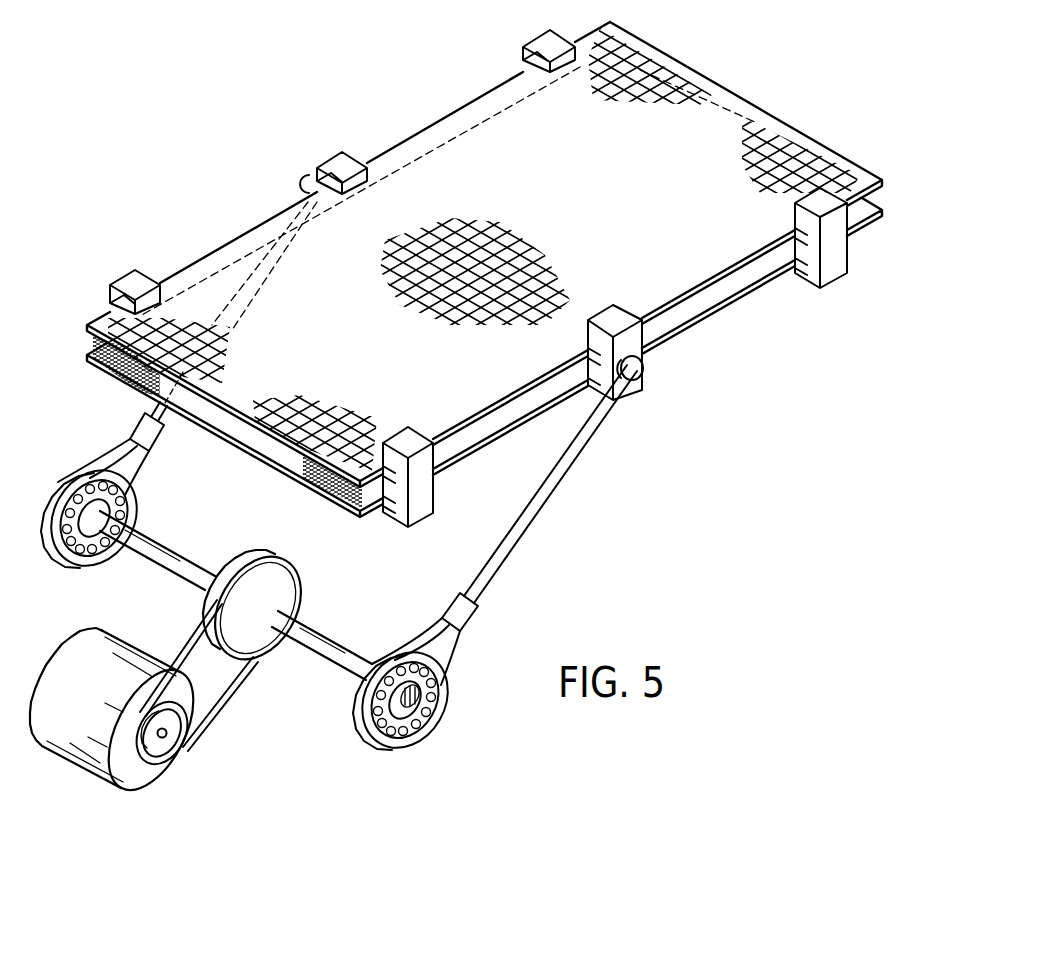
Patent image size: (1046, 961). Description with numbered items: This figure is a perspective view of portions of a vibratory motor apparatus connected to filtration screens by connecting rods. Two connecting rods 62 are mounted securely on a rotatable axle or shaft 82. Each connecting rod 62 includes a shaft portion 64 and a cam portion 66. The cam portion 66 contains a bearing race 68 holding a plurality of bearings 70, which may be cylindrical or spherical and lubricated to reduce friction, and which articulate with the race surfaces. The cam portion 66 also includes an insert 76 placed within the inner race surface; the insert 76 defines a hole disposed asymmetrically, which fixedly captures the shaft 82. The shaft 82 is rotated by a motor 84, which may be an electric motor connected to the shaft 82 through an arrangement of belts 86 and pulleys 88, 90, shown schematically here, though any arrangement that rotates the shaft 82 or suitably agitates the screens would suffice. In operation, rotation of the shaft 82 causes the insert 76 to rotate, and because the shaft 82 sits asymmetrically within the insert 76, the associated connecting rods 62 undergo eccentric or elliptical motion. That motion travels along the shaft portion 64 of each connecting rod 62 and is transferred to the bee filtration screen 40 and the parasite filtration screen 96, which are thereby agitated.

The bee filtration screen 40 is at (702, 130).
The connecting rod 62 is at (612, 463).
The shaft portion 64 is at (570, 470).
The cam portion 66 is at (360, 736).
The bearing race 68 is at (420, 718).
The bearings 70 is at (432, 694).
The insert 76 is at (397, 712).
The shaft 82 is at (167, 577).
The motor 84 is at (87, 747).
The belts 86 is at (223, 695).
The pulley 88 is at (282, 583).
The pulley 90 is at (163, 747).
The parasite filtration screen 96 is at (707, 318).